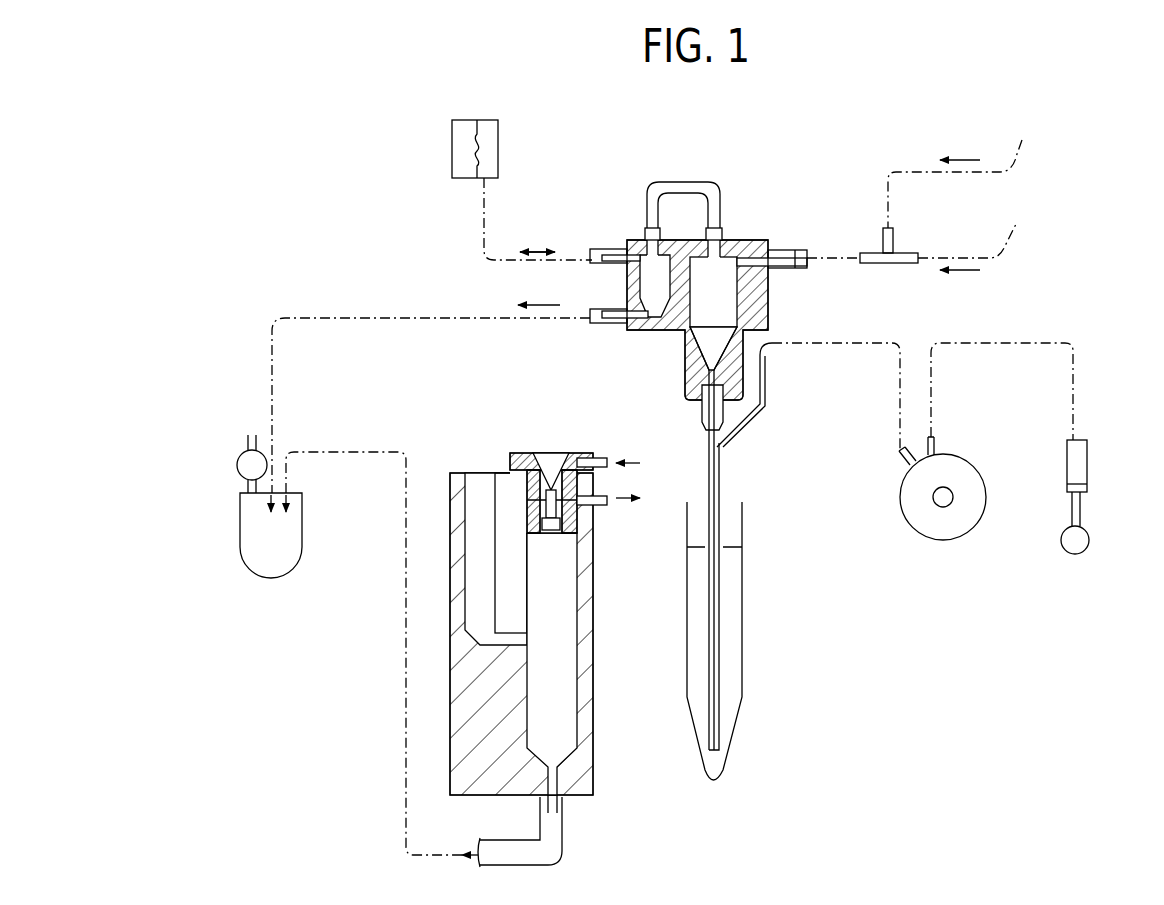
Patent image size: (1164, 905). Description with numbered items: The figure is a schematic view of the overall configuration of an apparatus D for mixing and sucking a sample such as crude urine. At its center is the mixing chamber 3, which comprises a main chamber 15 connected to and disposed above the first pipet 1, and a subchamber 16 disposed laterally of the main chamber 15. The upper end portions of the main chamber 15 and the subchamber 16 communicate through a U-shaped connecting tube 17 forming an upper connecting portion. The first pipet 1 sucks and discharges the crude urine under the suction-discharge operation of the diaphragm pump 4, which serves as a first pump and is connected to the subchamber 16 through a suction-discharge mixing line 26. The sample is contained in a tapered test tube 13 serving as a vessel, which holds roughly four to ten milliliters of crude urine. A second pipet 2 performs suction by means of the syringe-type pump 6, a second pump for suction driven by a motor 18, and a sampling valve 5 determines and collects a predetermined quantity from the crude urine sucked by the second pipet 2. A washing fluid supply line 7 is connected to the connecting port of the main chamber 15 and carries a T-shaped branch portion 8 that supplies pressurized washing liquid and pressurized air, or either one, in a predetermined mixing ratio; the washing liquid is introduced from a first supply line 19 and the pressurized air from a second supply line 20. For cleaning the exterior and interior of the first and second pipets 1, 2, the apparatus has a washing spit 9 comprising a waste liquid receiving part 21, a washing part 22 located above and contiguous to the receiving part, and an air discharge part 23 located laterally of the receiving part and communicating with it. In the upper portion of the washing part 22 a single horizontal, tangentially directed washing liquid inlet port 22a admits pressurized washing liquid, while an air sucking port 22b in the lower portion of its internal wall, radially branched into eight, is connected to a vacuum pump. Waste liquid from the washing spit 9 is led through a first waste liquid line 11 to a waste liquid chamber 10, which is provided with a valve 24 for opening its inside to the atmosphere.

The apparatus for mixing and sucking a sample D is at (288, 205).
The first pipet 1 is at (709, 610).
The second pipet 2 is at (719, 648).
The mixing chamber 3 is at (755, 316).
The diaphragm pump 4 is at (492, 133).
The sampling valve 5 is at (953, 528).
The syringe-type pump 6 is at (1080, 465).
The washing fluid supply line 7 is at (852, 256).
The T-shaped branch portion 8 is at (888, 263).
The washing spit 9 is at (597, 735).
The waste liquid chamber 10 is at (290, 550).
The first waste liquid line 11 is at (400, 700).
The tapered test tube 13 is at (742, 685).
The main chamber 15 is at (712, 316).
The subchamber 16 is at (657, 268).
The U-shaped connecting tube 17 is at (687, 182).
The motor 18 is at (1089, 541).
The first supply line 19 is at (974, 233).
The second supply line 20 is at (964, 170).
The waste liquid receiving part 21 is at (562, 593).
The washing part 22 is at (552, 480).
The washing liquid inlet port 22a is at (607, 458).
The air sucking port 22b is at (607, 506).
The air discharge part 23 is at (480, 488).
The valve 24 is at (238, 465).
The suction-discharge mixing line 26 is at (484, 228).